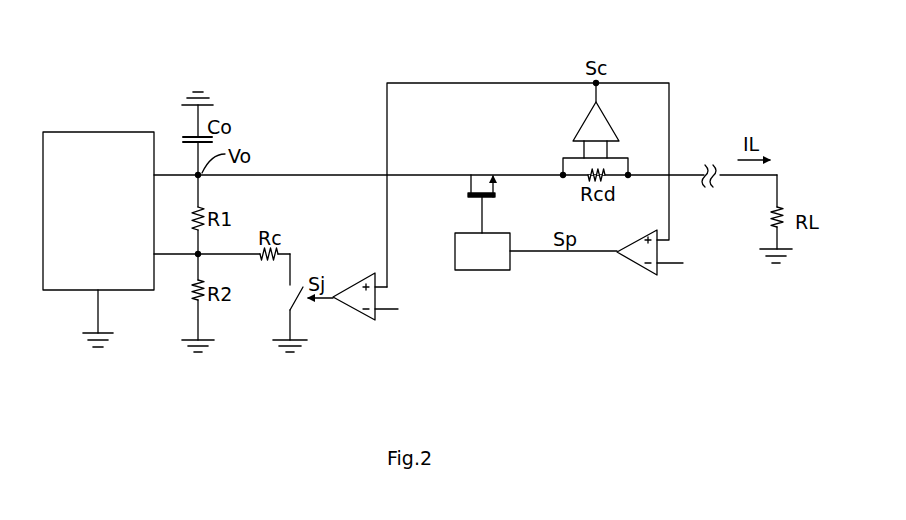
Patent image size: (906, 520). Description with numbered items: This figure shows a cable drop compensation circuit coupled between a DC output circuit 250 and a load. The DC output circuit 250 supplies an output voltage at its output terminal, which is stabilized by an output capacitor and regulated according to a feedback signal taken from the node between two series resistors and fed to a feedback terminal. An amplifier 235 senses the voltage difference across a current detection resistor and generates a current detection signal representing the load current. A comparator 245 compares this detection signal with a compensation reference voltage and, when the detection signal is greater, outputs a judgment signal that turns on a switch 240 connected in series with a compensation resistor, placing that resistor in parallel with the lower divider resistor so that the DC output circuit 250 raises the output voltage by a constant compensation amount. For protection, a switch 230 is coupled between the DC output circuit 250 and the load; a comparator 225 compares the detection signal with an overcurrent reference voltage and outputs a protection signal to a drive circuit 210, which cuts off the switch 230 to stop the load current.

The DC output circuit 250 is at (98, 239).
The drive circuit 210 is at (482, 251).
The switch 230 is at (502, 204).
The amplifier 235 is at (608, 120).
The switch 240 is at (285, 299).
The comparator 245 is at (352, 308).
The comparator 225 is at (633, 265).